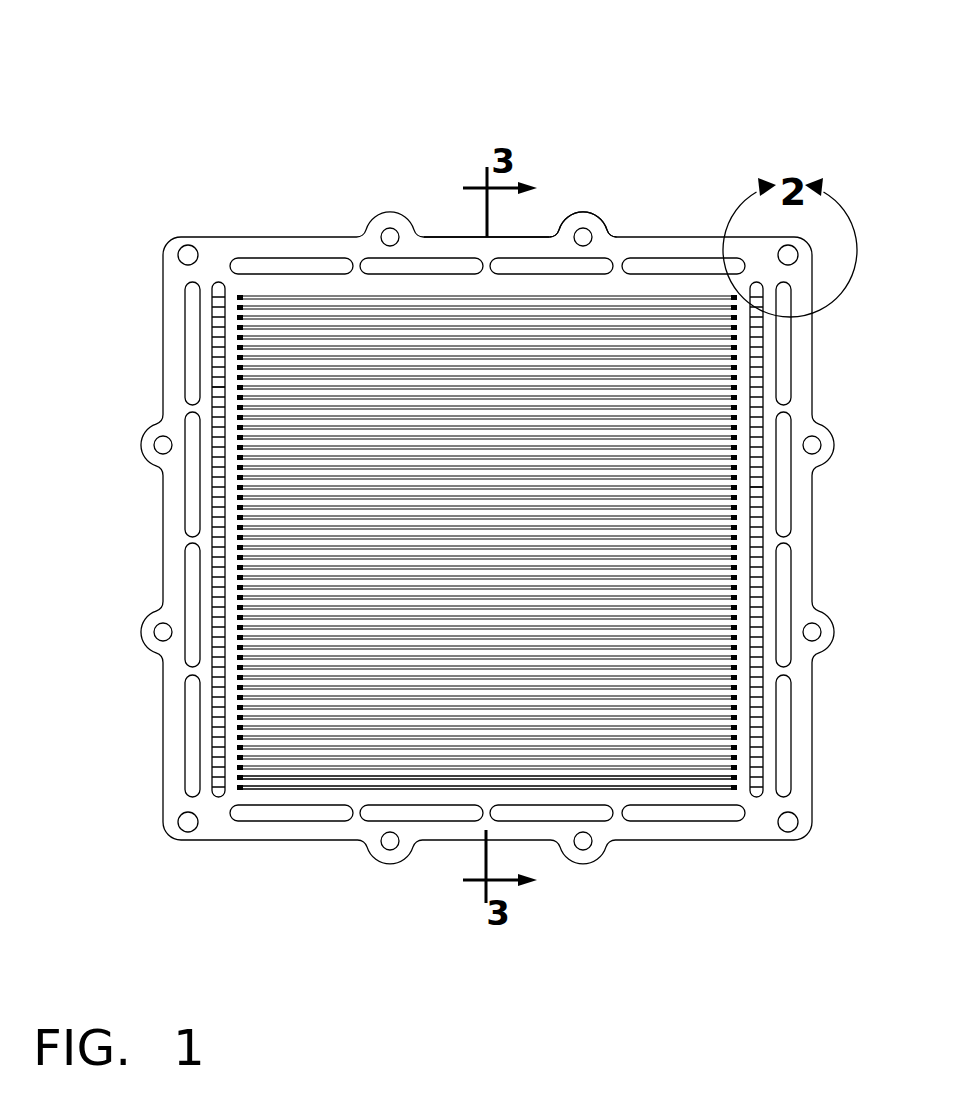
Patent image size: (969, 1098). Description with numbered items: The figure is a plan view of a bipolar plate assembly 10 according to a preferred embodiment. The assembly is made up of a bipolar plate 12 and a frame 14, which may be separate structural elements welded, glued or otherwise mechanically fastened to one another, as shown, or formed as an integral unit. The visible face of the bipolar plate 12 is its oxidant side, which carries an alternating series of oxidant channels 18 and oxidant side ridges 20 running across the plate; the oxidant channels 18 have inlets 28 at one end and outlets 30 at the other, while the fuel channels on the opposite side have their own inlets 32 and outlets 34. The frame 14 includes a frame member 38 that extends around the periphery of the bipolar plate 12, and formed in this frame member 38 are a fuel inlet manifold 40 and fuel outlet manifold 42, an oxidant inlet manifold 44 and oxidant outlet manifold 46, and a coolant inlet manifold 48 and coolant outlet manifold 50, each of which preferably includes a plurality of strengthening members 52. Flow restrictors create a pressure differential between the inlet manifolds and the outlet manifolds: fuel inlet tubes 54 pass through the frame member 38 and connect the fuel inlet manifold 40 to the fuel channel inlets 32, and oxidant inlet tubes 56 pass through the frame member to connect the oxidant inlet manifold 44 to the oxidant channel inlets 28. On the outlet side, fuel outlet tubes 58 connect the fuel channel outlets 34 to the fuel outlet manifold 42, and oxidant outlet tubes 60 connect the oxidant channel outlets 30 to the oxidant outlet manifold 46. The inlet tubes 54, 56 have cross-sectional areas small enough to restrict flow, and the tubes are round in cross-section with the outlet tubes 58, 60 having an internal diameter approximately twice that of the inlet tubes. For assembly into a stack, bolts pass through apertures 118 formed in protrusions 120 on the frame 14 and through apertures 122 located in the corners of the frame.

The bipolar plate assembly 10 is at (593, 90).
The bipolar plate 12 is at (440, 330).
The frame 14 is at (525, 238).
The oxidant channels 18 is at (648, 788).
The oxidant side ridges 20 is at (632, 783).
The inlets 28 is at (740, 790).
The outlets 30 is at (235, 790).
The inlets 32 is at (733, 783).
The outlets 34 is at (238, 782).
The frame member 38 is at (462, 250).
The fuel inlet manifold 40 is at (782, 446).
The fuel outlet manifold 42 is at (193, 300).
The oxidant inlet manifold 44 is at (753, 485).
The oxidant outlet manifold 46 is at (222, 362).
The coolant inlet manifold 48 is at (323, 268).
The coolant outlet manifold 50 is at (337, 808).
The strengthening members 52 is at (787, 407).
The fuel inlet tubes 54 is at (780, 503).
The oxidant inlet tubes 56 is at (755, 572).
The fuel outlet tubes 58 is at (198, 325).
The oxidant outlet tubes 60 is at (220, 387).
The apertures 118 is at (592, 233).
The protrusions 120 is at (593, 225).
The apertures 122 is at (183, 250).